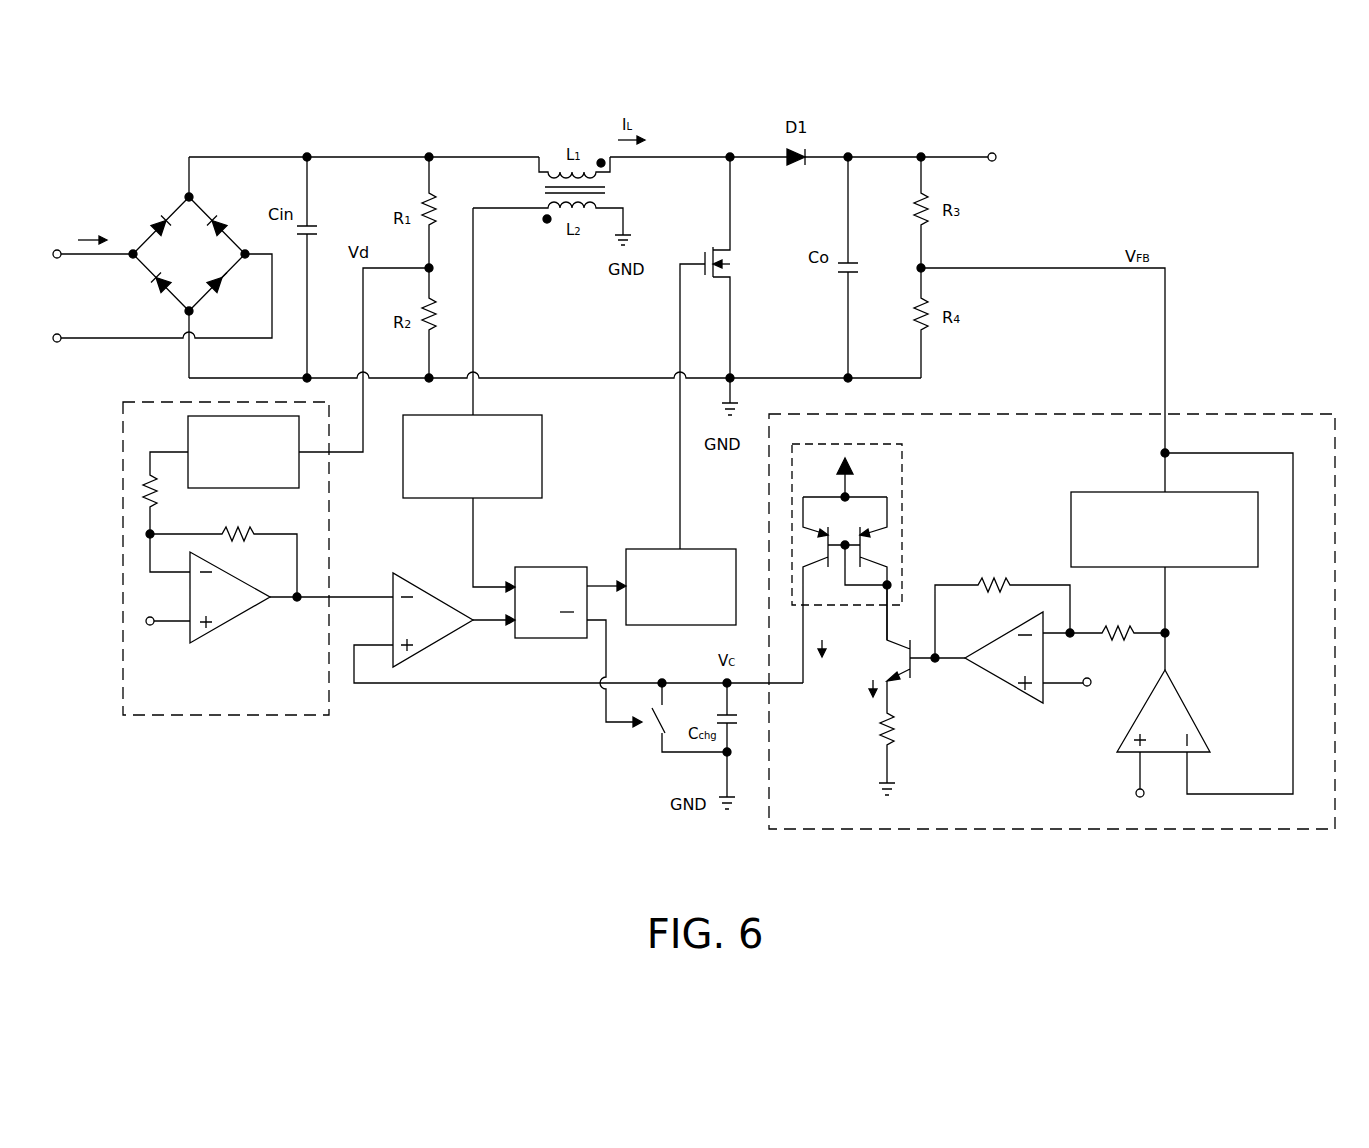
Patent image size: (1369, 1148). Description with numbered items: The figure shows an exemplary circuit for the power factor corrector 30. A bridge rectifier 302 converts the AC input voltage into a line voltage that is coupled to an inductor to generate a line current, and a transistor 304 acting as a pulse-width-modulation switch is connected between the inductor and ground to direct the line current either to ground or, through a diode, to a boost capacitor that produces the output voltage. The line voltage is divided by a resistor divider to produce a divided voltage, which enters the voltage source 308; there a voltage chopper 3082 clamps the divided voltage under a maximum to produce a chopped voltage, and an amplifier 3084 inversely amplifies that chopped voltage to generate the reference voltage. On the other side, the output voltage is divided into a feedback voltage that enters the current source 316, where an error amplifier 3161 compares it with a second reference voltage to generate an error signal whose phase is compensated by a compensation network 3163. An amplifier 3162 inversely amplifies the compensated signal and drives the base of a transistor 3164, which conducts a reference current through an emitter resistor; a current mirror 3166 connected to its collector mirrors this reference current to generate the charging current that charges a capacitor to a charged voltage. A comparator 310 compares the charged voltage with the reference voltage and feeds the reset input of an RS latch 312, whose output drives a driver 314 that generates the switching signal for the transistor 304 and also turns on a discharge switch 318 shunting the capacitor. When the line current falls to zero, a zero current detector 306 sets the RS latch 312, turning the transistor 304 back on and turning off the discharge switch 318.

The power factor corrector 30 is at (1300, 109).
The bridge rectifier 302 is at (144, 185).
The transistor 304 is at (700, 248).
The zero current detector 306 is at (543, 446).
The voltage source 308 is at (230, 558).
The voltage chopper 3082 is at (240, 488).
The amplifier 3084 is at (224, 624).
The comparator 310 is at (425, 590).
The RS latch 312 is at (551, 566).
The driver 314 is at (700, 548).
The current source 316 is at (1052, 583).
The error amplifier 3161 is at (1190, 708).
The amplifier 3162 is at (1003, 690).
The compensation network 3163 is at (1071, 530).
The transistor 3164 is at (923, 690).
The current mirror 3166 is at (905, 506).
The discharge switch 318 is at (645, 742).